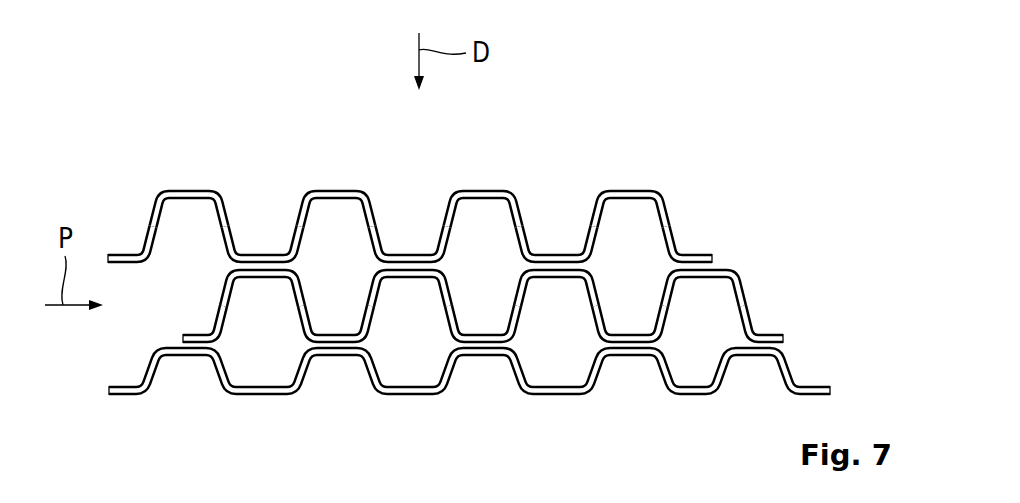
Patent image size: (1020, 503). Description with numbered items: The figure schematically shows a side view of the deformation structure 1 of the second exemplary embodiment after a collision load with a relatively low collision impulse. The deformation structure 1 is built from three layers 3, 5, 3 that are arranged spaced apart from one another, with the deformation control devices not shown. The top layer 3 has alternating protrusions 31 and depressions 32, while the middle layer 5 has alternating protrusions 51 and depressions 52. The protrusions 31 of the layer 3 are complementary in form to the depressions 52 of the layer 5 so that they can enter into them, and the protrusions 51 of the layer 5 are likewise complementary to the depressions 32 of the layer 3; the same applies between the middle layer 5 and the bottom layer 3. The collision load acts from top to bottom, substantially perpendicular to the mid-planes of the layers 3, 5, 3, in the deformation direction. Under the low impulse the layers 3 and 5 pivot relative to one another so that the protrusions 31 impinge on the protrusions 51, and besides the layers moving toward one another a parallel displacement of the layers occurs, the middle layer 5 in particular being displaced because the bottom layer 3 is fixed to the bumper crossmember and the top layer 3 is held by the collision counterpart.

The deformation structure 1 is at (235, 80).
The layer 3 is at (499, 253).
The middle layer 5 is at (516, 274).
The protrusion 31 is at (270, 262).
The depression 32 is at (193, 199).
The protrusion 51 is at (254, 272).
The depression 52 is at (342, 337).